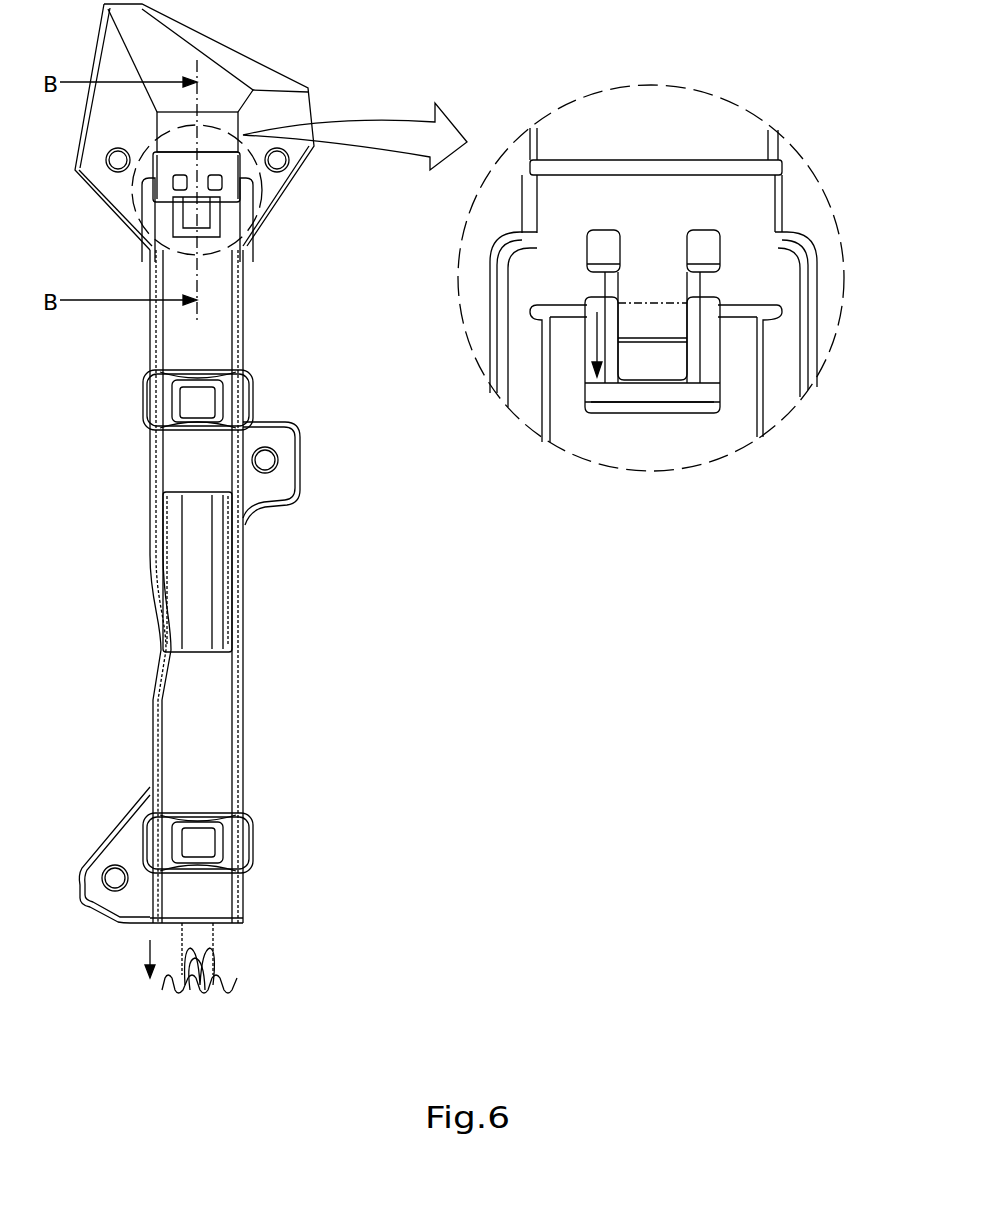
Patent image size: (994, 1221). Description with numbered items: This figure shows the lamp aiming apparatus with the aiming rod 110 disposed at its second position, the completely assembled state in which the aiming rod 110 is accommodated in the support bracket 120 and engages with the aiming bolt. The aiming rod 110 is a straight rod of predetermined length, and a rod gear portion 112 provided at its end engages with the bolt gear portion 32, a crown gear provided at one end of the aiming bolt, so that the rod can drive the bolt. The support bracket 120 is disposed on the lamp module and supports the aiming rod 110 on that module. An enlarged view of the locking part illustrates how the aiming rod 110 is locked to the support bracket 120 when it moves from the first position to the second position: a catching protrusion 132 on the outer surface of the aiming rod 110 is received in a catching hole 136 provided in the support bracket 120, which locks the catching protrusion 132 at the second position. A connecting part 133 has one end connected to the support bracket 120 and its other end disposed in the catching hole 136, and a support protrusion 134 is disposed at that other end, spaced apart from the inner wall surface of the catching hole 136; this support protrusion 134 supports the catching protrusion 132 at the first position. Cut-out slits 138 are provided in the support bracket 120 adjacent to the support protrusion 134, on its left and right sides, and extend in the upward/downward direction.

The aiming rod 110 is at (203, 575).
The support bracket 120 is at (203, 720).
The rod gear portion 112 is at (197, 935).
The bolt gear portion 32 is at (230, 978).
The catching protrusion 132 is at (687, 393).
The connecting part 133 is at (643, 280).
The support protrusion 134 is at (638, 362).
The catching hole 136 is at (648, 408).
The cut-out slits 138 is at (697, 250).